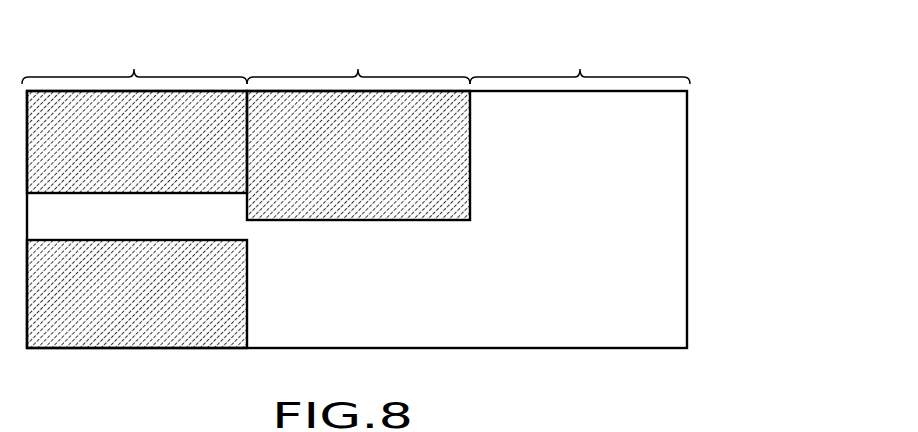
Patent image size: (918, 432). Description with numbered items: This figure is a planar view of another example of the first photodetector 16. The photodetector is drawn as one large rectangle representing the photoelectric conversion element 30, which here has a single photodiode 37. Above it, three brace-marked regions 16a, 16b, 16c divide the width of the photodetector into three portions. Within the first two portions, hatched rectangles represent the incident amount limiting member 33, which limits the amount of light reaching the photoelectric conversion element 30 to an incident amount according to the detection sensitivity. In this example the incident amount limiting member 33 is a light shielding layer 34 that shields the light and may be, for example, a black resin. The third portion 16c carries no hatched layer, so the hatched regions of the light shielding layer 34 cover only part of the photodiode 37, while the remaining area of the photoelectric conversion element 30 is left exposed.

The first photodetector 16 is at (417, 218).
The first region 16a is at (134, 58).
The second region 16b is at (358, 58).
The third region 16c is at (580, 58).
The photoelectric conversion element 30 is at (420, 219).
The photodiode 37 is at (687, 312).
The incident amount limiting member 33 is at (248, 218).
The light shielding layer 34 is at (277, 90).